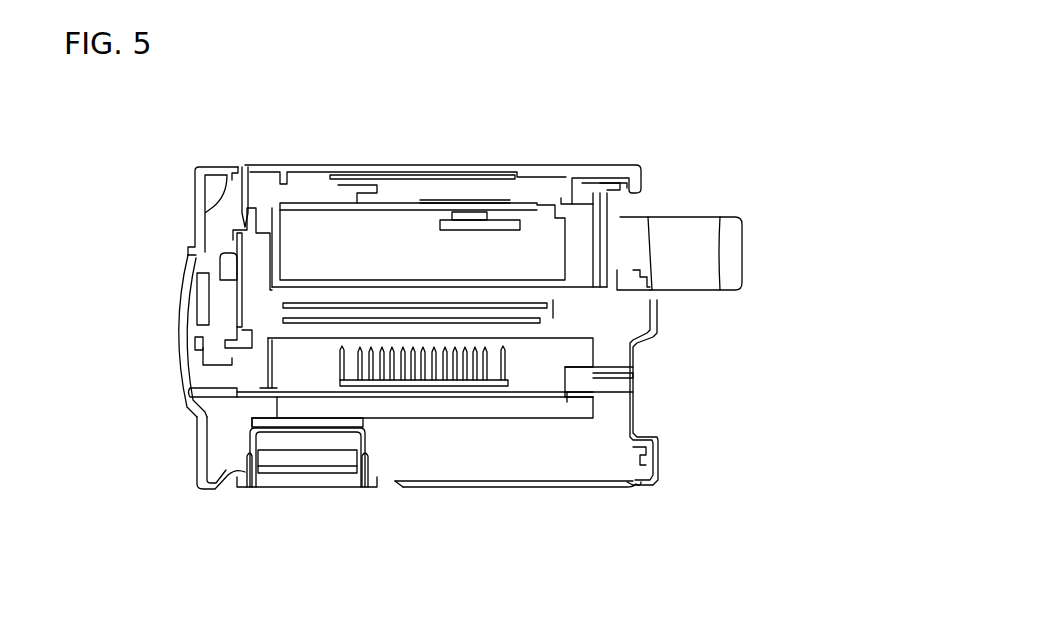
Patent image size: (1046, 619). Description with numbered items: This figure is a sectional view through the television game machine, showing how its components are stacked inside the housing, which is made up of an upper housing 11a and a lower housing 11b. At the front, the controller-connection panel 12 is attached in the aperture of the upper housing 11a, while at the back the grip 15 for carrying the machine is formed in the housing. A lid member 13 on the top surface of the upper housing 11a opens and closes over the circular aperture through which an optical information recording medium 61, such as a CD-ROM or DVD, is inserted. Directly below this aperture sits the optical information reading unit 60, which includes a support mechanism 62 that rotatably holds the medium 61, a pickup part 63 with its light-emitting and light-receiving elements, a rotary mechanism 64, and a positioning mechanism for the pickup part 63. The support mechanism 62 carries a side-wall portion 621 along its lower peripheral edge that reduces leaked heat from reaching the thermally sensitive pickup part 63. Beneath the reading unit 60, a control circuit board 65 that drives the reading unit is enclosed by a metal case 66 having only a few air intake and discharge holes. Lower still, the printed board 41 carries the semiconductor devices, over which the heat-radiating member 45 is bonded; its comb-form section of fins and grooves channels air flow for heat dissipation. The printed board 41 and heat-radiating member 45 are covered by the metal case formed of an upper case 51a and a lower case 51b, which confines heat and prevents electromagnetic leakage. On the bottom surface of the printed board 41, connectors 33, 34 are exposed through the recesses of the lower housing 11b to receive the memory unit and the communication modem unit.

The upper housing 11a is at (193, 195).
The lower housing 11b is at (200, 460).
The controller-connection panel 12 is at (180, 294).
The lid member 13 is at (523, 167).
The grip 15 is at (733, 237).
The connector 33 is at (300, 463).
The connector 34 is at (320, 423).
The printed board 41 is at (440, 393).
The heat-radiating member 45 is at (508, 373).
The upper case 51a is at (593, 345).
The lower case 51b is at (593, 410).
The optical information reading unit 60 is at (576, 259).
The optical information recording medium 61 is at (453, 197).
The support mechanism 62 is at (303, 227).
The side-wall portion 621 is at (265, 262).
The pickup part 63 is at (468, 215).
The rotary mechanism 64 is at (397, 200).
The control circuit board 65 is at (352, 220).
The metal case 66 is at (556, 313).